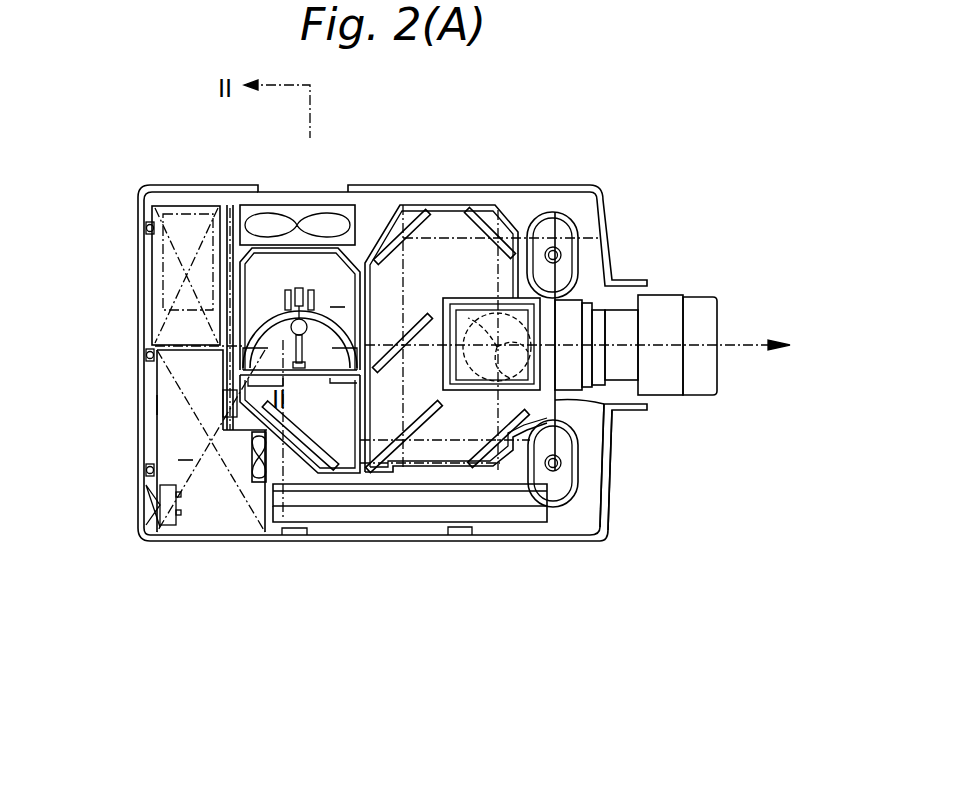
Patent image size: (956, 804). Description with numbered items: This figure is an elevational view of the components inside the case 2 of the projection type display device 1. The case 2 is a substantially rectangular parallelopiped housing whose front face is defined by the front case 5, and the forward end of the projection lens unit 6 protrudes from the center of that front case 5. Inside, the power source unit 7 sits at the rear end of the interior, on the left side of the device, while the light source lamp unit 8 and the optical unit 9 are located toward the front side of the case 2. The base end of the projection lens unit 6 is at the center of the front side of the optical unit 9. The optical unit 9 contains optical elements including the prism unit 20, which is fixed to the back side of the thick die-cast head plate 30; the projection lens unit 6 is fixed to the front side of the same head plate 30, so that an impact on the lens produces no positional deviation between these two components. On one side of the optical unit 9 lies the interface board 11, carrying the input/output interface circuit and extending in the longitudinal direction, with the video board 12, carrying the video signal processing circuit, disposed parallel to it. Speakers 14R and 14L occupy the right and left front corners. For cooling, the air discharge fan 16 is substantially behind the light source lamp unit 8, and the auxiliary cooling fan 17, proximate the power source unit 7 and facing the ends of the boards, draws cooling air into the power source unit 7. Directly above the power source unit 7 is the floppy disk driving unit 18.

The projection type display device 1 is at (598, 163).
The case 2 is at (140, 290).
The front case 5 is at (610, 447).
The projection lens unit 6 is at (685, 292).
The power source unit 7 is at (205, 441).
The light source lamp unit 8 is at (300, 311).
The optical unit 9 is at (452, 188).
The interface board 11 is at (482, 513).
The video board 12 is at (397, 490).
The right speaker 14R is at (583, 258).
The left speaker 14L is at (583, 480).
The air discharge fan 16 is at (222, 188).
The auxiliary cooling fan 17 is at (253, 478).
The floppy disk driving unit 18 is at (150, 405).
The prism unit 20 is at (487, 377).
The head plate 30 is at (580, 402).